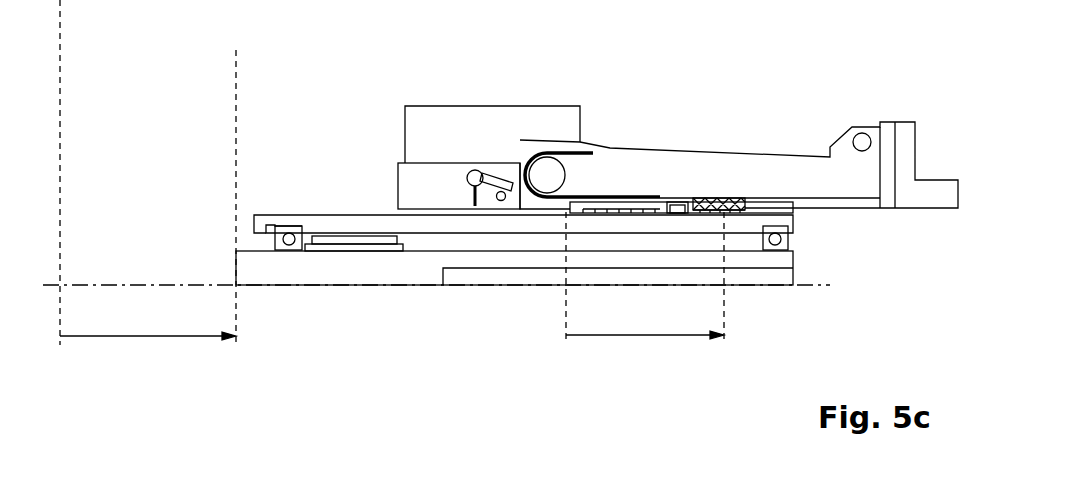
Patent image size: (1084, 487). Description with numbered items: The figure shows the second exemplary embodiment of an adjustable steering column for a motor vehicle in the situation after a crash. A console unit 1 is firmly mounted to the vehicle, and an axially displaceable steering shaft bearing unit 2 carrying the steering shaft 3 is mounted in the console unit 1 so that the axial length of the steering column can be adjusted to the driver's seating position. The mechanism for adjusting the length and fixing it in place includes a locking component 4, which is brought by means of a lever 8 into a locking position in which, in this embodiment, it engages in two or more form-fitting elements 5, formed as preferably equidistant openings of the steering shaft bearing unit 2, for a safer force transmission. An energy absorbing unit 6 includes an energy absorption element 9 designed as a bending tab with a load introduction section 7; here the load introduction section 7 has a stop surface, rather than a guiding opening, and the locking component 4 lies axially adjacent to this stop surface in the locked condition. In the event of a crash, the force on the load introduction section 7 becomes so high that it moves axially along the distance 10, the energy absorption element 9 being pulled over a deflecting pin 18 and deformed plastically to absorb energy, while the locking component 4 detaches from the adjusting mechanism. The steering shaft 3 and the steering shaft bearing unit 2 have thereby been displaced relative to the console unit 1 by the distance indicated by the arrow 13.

The console unit 1 is at (888, 130).
The steering shaft bearing unit 2 is at (309, 224).
The steering shaft 3 is at (389, 275).
The locking component 4 is at (688, 213).
The form-fitting element 5 is at (640, 213).
The energy absorbing unit 6 is at (645, 175).
The load introduction section 7 is at (732, 213).
The lever 8 is at (468, 170).
The energy absorption element 9 is at (722, 190).
The distance 10 is at (654, 336).
The displacement distance arrow 13 is at (147, 337).
The deflecting pin 18 is at (545, 170).